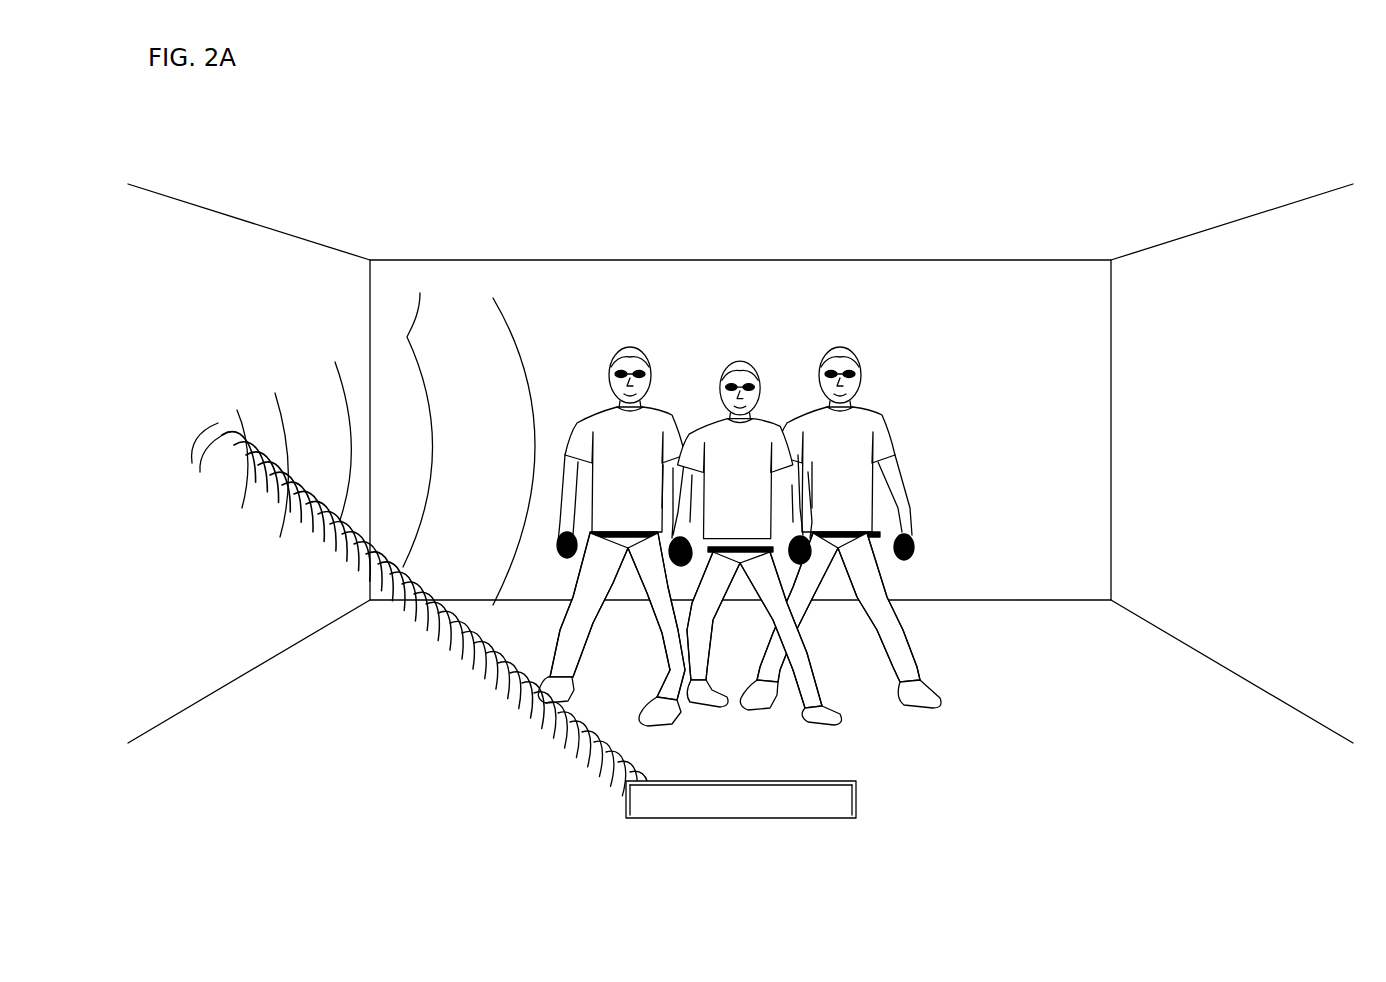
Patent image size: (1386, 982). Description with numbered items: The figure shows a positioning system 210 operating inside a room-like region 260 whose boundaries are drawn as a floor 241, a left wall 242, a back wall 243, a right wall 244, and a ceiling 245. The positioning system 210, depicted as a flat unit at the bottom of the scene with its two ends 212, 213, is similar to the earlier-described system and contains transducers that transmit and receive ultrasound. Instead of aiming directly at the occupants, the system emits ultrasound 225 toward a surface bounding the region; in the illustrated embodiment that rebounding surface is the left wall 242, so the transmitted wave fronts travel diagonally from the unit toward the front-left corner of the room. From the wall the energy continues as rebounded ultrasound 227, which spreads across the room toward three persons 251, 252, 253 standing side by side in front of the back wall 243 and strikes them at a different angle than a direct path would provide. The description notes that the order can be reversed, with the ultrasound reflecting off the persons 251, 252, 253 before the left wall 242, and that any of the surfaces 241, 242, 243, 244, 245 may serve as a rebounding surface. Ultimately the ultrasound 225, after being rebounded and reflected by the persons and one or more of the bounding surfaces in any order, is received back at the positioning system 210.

The positioning system 210 is at (757, 830).
The first end of device 212 is at (640, 818).
The second end of device 213 is at (855, 818).
The ultrasound 225 is at (540, 745).
The rebounded ultrasound 227 is at (416, 415).
The floor 241 is at (388, 653).
The left wall 242 is at (311, 608).
The back wall 243 is at (456, 571).
The right wall 244 is at (1161, 593).
The ceiling 245 is at (411, 253).
The person 251 is at (623, 345).
The person 252 is at (738, 360).
The person 253 is at (828, 340).
The room 260 is at (929, 323).